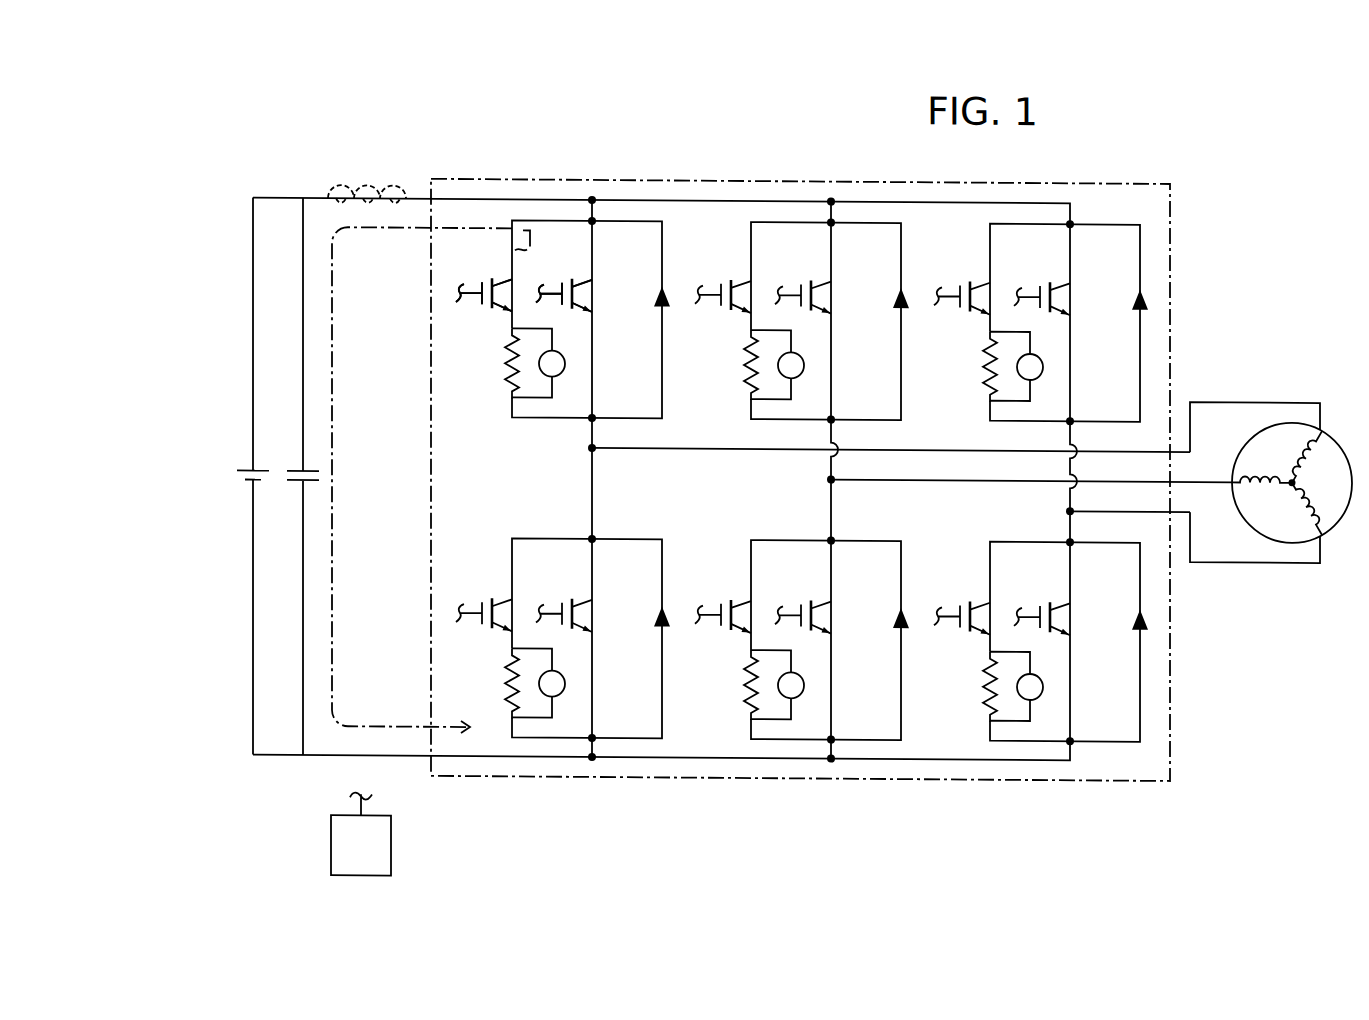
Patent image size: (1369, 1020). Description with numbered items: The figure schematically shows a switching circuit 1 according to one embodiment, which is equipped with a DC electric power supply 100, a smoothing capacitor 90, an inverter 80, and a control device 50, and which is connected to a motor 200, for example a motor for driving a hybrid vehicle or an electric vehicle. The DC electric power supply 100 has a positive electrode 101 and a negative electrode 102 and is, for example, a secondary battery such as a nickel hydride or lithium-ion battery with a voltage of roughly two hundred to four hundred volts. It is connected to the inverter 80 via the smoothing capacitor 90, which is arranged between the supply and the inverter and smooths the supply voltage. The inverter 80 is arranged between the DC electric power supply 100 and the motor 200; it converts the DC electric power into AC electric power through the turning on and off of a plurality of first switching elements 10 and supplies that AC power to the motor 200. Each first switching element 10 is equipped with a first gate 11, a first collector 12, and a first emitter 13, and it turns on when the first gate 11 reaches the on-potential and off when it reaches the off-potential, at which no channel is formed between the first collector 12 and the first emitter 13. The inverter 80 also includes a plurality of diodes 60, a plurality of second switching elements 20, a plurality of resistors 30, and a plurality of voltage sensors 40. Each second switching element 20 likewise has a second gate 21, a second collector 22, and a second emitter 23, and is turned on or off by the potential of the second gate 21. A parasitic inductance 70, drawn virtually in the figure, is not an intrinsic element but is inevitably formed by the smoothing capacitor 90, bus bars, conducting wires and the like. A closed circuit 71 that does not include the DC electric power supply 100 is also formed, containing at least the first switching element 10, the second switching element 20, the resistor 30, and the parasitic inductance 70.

The switching circuit 1 is at (698, 149).
The first switching element 10 is at (595, 285).
The first gate 11 is at (547, 300).
The first collector 12 is at (587, 283).
The first emitter 13 is at (573, 307).
The second switching element 20 is at (518, 286).
The second gate 21 is at (474, 283).
The second collector 22 is at (503, 283).
The second emitter 23 is at (500, 310).
The resistor 30 is at (506, 375).
The voltage sensor 40 is at (561, 374).
The control device 50 is at (391, 848).
The diode 60 is at (674, 285).
The parasitic inductance 70 is at (379, 170).
The closed circuit 71 is at (333, 478).
The inverter 80 is at (1172, 245).
The smoothing capacitor 90 is at (296, 470).
The DC electric power supply 100 is at (216, 476).
The positive electrode 101 is at (247, 470).
The negative electrode 102 is at (250, 484).
The motor 200 is at (1340, 436).